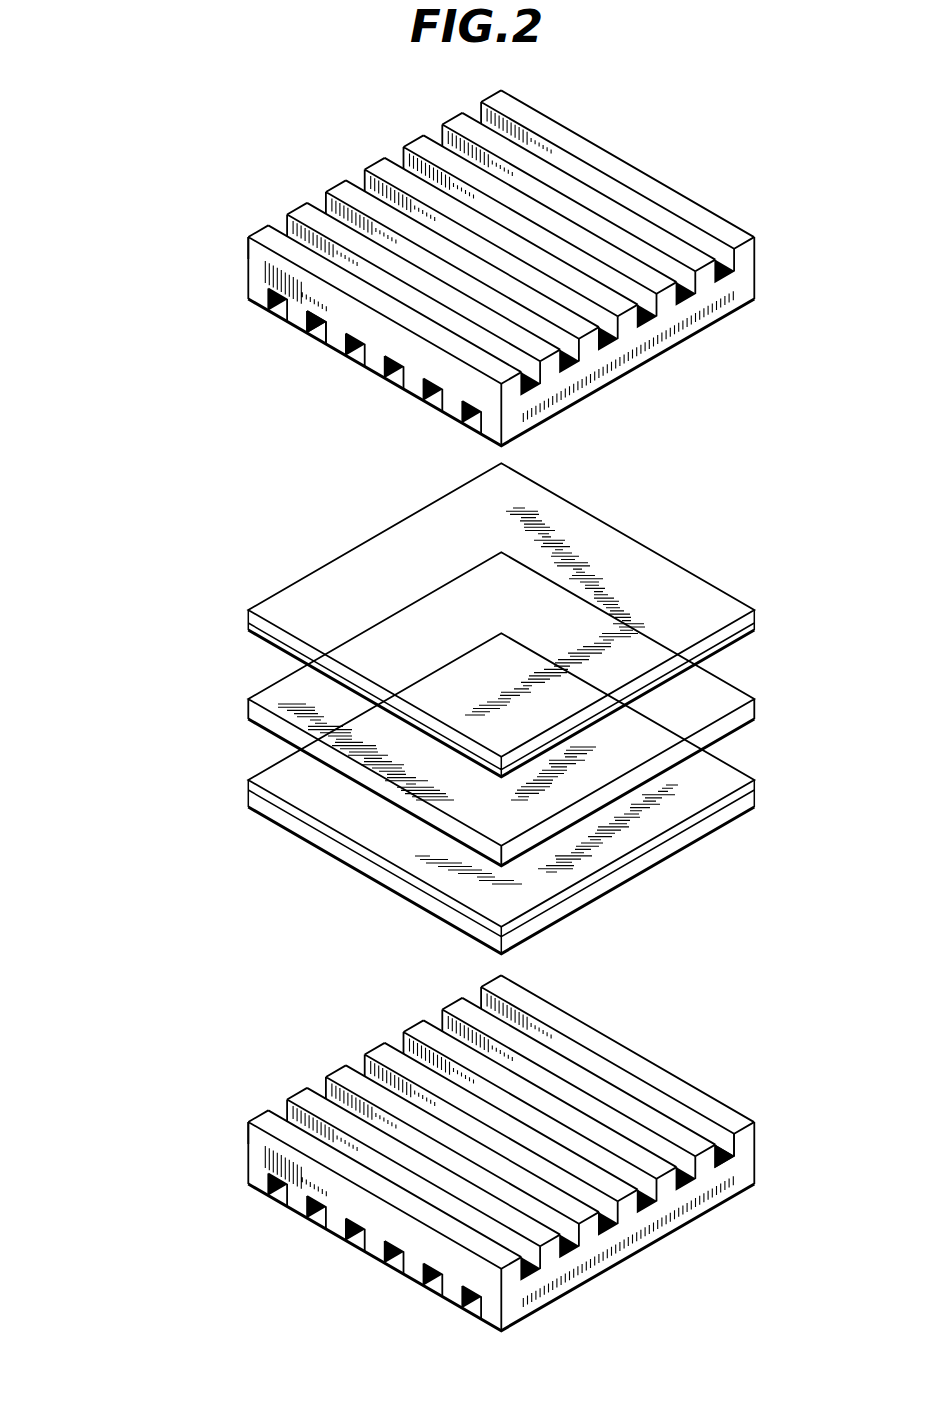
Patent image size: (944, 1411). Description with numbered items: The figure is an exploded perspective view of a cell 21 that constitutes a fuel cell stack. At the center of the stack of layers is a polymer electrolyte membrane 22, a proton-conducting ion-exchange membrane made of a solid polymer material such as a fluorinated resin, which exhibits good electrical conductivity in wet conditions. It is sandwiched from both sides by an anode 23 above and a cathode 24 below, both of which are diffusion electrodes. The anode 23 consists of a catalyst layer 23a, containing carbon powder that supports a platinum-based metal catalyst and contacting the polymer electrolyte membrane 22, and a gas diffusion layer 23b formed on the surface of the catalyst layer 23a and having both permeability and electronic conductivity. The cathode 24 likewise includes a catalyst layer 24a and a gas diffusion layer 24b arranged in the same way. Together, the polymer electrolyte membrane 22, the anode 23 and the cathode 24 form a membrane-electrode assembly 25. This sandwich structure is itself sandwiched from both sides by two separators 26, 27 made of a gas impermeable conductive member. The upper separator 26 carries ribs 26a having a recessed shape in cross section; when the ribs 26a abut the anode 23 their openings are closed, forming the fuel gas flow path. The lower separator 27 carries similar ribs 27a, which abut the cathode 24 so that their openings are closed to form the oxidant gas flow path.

The cell 21 is at (99, 187).
The polymer electrolyte membrane 22 is at (248, 710).
The anode 23 is at (435, 619).
The catalyst layer 23a is at (458, 699).
The gas diffusion layer 23b is at (458, 676).
The cathode 24 is at (435, 793).
The catalyst layer 24a is at (458, 850).
The gas diffusion layer 24b is at (458, 872).
The membrane-electrode assembly 25 is at (111, 600).
The separator 26 is at (462, 267).
The ribs 26a is at (313, 323).
The separator 27 is at (543, 1152).
The ribs 27a is at (705, 1163).